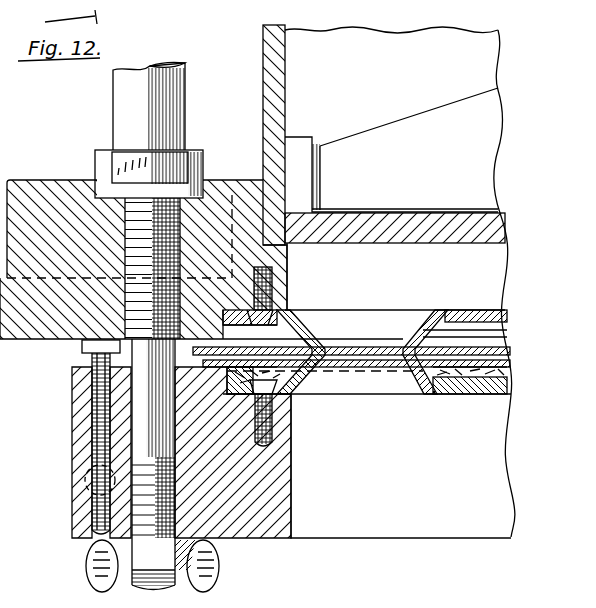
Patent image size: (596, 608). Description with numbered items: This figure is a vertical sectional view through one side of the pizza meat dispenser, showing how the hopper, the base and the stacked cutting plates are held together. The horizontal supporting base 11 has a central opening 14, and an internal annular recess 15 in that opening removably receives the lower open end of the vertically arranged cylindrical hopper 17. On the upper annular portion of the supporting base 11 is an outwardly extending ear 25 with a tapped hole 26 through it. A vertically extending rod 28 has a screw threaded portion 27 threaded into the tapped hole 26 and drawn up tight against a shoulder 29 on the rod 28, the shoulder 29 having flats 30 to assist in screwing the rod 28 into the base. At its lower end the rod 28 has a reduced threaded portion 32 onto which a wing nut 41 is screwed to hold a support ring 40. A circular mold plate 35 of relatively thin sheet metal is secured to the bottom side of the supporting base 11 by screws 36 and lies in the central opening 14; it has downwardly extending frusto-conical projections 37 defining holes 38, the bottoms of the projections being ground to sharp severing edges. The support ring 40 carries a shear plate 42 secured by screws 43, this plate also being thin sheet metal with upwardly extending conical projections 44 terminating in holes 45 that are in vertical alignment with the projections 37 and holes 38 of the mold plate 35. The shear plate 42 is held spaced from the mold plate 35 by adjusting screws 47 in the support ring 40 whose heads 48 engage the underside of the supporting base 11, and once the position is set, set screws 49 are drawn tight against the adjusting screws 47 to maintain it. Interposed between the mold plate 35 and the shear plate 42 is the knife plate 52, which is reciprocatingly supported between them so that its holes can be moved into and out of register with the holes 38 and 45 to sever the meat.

The supporting base 11 is at (27, 340).
The central opening 14 is at (288, 273).
The internal annular recess 15 is at (313, 211).
The cylindrical hopper 17 is at (262, 79).
The ears 25 is at (42, 190).
The tapped holes 26 is at (128, 257).
The screw threaded portions 27 is at (180, 252).
The rods 28 is at (122, 97).
The shoulders 29 is at (103, 160).
The flats 30 is at (165, 163).
The reduced threaded portions 32 is at (171, 442).
The mold plate 35 is at (463, 310).
The screws 36 is at (252, 296).
The frusto-conical projections 37 is at (403, 342).
The holes 38 is at (406, 347).
The support ring 40 is at (264, 538).
The wing nuts 41 is at (210, 577).
The shear plate 42 is at (466, 394).
The screws 43 is at (263, 423).
The conical projections 44 is at (434, 394).
The holes 45 is at (404, 354).
The adjusting screws 47 is at (97, 493).
The heads 48 is at (96, 339).
The set screws 49 is at (88, 490).
The knife plate 52 is at (466, 350).